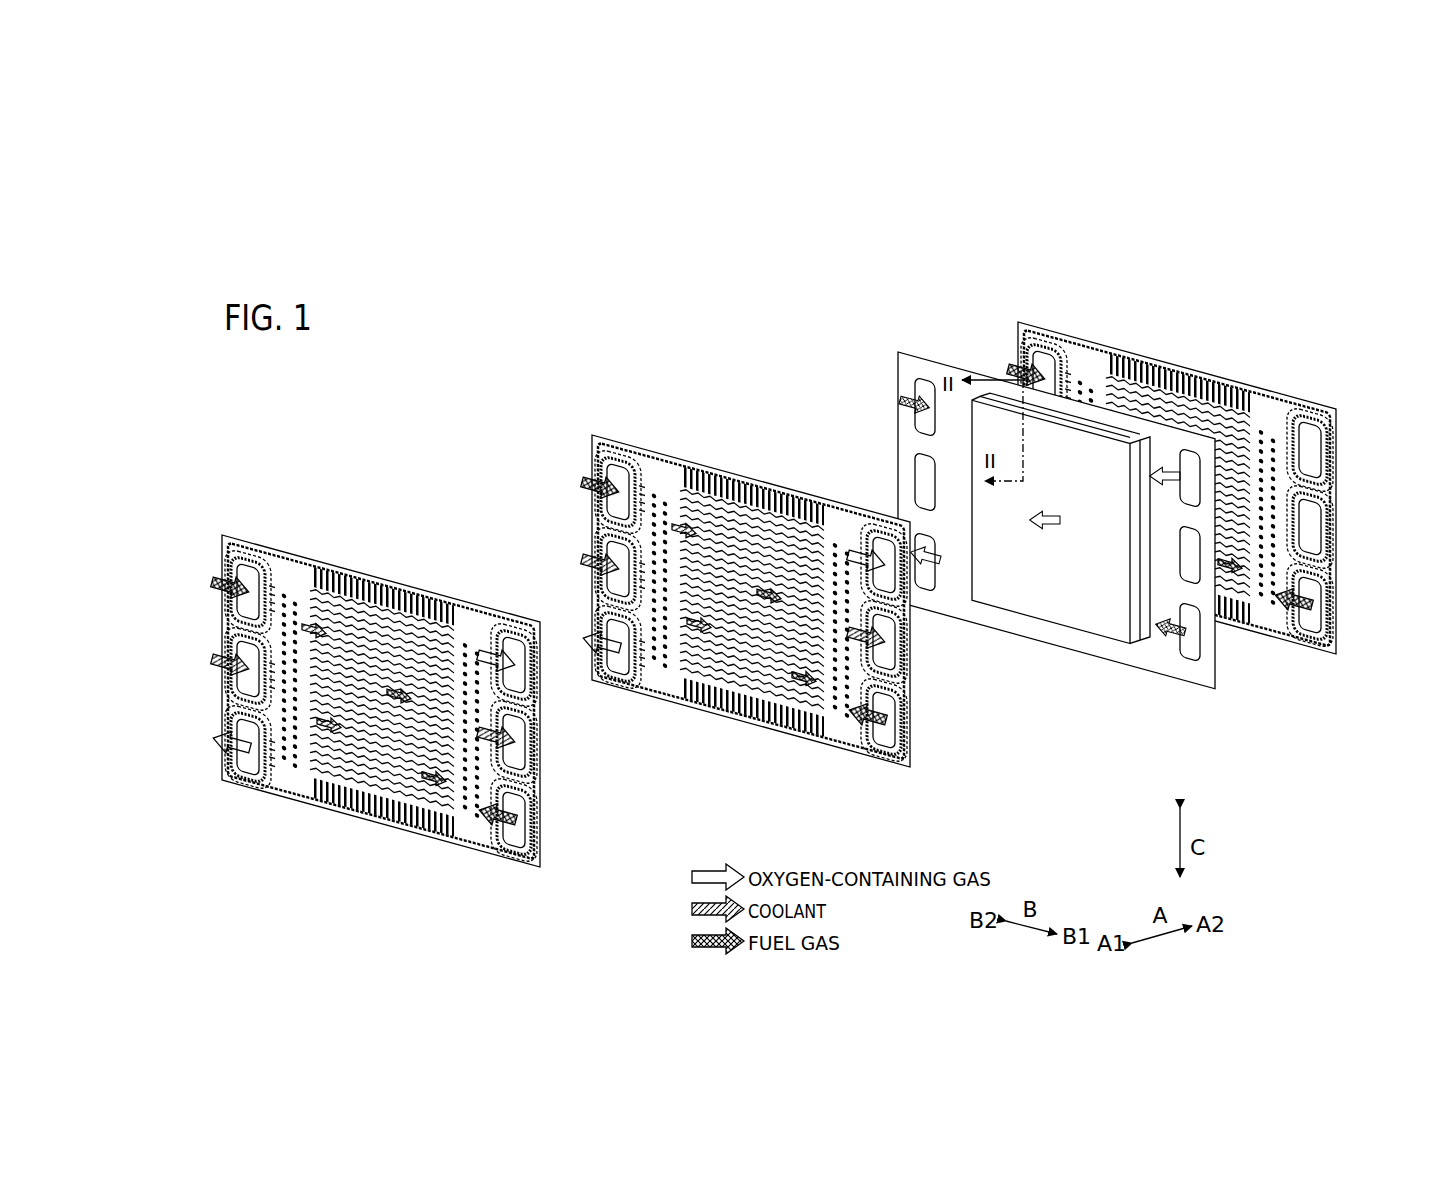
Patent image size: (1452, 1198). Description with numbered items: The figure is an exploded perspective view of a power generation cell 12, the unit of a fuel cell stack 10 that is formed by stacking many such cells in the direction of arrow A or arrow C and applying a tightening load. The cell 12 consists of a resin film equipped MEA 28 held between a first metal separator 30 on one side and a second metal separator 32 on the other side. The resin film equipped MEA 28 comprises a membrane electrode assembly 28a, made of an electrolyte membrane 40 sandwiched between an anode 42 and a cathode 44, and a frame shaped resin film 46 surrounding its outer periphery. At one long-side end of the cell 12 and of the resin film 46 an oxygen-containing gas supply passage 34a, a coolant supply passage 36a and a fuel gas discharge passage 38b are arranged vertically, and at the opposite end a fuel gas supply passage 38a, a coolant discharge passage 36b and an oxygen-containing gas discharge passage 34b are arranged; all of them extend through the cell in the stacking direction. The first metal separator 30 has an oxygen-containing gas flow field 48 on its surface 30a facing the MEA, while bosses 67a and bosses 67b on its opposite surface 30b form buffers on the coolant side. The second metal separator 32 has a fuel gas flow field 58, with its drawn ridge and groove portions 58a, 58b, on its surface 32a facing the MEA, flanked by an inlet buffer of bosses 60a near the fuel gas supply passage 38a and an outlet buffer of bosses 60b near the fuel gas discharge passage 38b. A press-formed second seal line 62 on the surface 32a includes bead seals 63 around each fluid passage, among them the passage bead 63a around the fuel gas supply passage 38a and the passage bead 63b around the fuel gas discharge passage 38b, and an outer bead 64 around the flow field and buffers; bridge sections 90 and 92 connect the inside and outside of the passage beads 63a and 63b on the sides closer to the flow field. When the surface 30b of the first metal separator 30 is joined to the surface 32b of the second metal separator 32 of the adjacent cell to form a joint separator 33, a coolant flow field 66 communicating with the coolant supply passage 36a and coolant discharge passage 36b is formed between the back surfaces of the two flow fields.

The fuel cell stack 10 is at (374, 290).
The power generation cell 12 is at (585, 290).
The resin film equipped MEA 28 is at (897, 348).
The membrane electrode assembly 28a is at (1088, 630).
The first metal separator 30 is at (592, 428).
The surface of first metal separator 30a is at (735, 746).
The surface of first metal separator 30b is at (708, 716).
The second metal separator 32 is at (222, 528).
The surface of second metal separator 32a is at (340, 812).
The surface of second metal separator 32b is at (370, 820).
The joint separator 33 is at (421, 488).
The oxygen-containing gas supply passage 34a is at (513, 640).
The oxygen-containing gas discharge passage 34b is at (248, 742).
The coolant supply passage 36a is at (528, 756).
The coolant discharge passage 36b is at (256, 765).
The fuel gas supply passage 38a is at (1045, 388).
The fuel gas discharge passage 38b is at (508, 865).
The electrolyte membrane 40 is at (1072, 617).
The anode 42 is at (1137, 647).
The cathode 44 is at (1032, 602).
The resin film 46 is at (925, 370).
The oxygen-containing gas flow field 48 is at (745, 482).
The fuel gas flow field 58 is at (406, 530).
The flow field ridge 58a is at (340, 645).
The flow field groove 58b is at (372, 650).
The bosses 60a is at (297, 778).
The bosses 60b is at (480, 826).
The second seal line 62 is at (616, 852).
The bead seal 63 is at (243, 676).
The passage bead 63a is at (235, 605).
The passage bead 63b is at (528, 862).
The outer bead 64 is at (545, 852).
The coolant flow field 66 is at (715, 500).
The bosses 67a is at (840, 706).
The bosses 67b is at (662, 682).
The bridge section 90 is at (296, 585).
The bridge section 92 is at (495, 836).